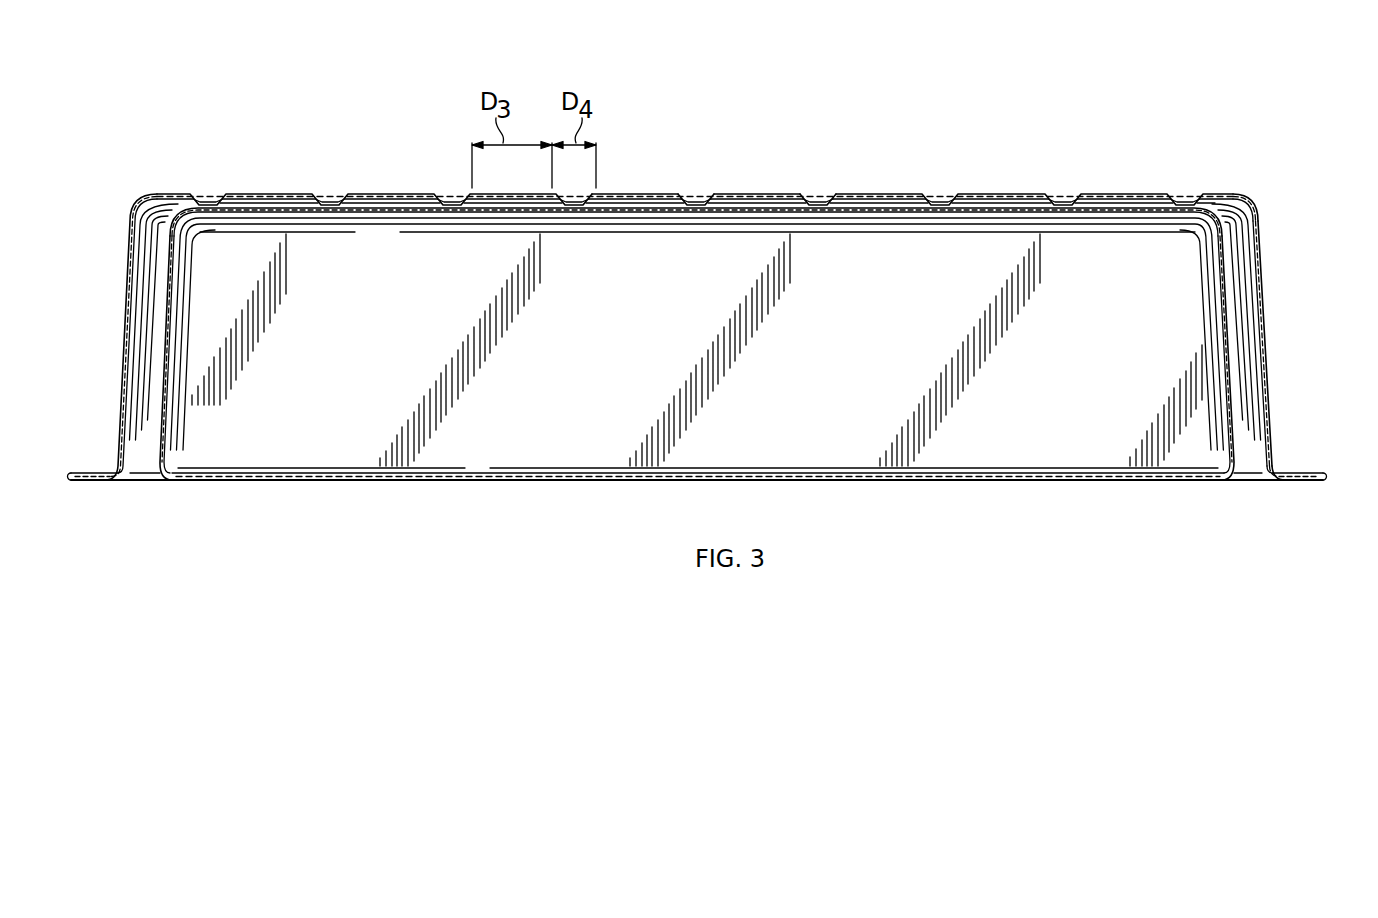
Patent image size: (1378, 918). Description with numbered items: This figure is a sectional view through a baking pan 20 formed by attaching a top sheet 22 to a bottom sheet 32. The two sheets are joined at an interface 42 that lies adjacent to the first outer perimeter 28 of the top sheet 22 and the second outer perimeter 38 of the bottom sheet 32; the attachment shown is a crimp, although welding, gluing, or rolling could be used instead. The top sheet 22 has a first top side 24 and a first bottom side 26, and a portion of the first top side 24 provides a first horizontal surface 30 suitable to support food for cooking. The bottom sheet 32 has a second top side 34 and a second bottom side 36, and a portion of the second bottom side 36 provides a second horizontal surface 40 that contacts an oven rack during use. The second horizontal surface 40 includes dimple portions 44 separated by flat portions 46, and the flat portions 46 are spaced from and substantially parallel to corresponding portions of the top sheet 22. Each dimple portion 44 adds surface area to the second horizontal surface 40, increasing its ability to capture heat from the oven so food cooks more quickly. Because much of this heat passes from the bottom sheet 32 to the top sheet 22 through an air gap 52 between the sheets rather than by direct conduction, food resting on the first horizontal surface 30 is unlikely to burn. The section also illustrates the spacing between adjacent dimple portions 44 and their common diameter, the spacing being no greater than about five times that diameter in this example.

The baking pan 20 is at (723, 276).
The top sheet 22 is at (1221, 438).
The first top side 24 is at (1224, 372).
The first bottom side 26 is at (1231, 344).
The first outer perimeter 28 is at (1313, 473).
The first horizontal surface 30 is at (977, 212).
The bottom sheet 32 is at (723, 304).
The second top side 34 is at (1243, 226).
The second bottom side 36 is at (1266, 247).
The second outer perimeter 38 is at (1329, 476).
The second horizontal surface 40 is at (1124, 193).
The interface 42 is at (1306, 462).
The dimple portions 44 is at (818, 197).
The flat portions 46 is at (645, 193).
The air gap 52 is at (730, 198).